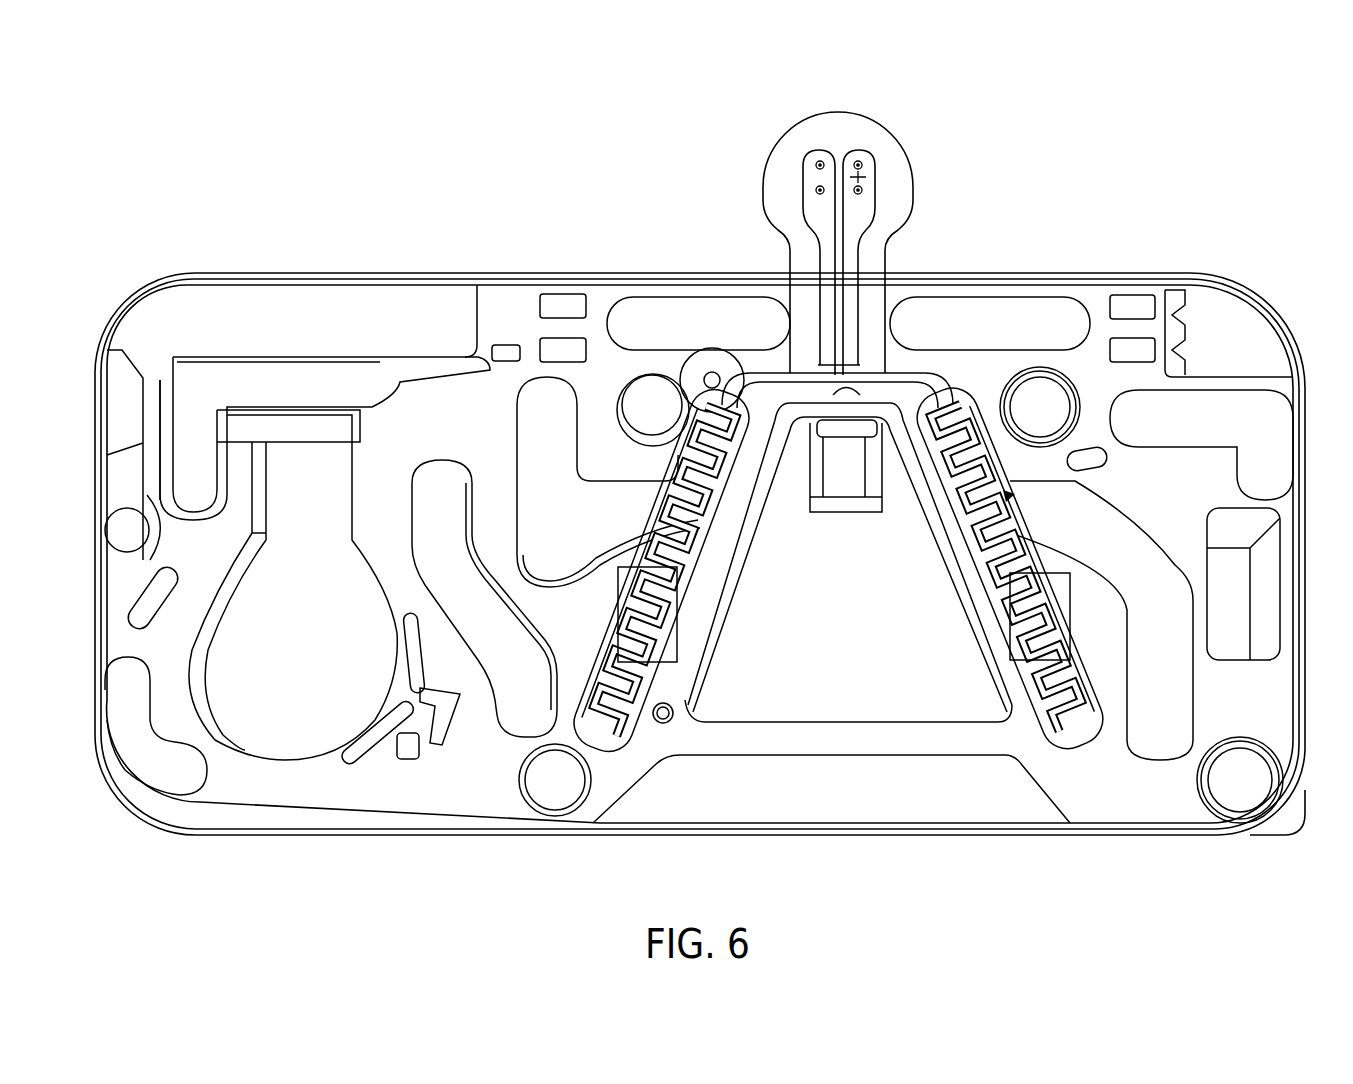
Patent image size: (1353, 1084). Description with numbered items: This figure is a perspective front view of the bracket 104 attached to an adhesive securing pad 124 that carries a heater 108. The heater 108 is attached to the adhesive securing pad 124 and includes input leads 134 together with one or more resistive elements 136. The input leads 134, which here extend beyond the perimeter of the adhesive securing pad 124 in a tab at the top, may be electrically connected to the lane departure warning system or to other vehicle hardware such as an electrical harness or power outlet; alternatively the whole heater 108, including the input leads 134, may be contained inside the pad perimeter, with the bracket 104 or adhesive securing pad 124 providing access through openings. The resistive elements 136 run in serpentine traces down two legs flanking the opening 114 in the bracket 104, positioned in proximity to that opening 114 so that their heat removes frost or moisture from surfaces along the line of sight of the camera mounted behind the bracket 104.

The bracket 104 is at (357, 330).
The heater 108 is at (818, 78).
The opening 114 is at (849, 490).
The adhesive securing pad 124 is at (1240, 275).
The input leads 134 is at (848, 173).
The resistive elements 136 is at (1023, 676).